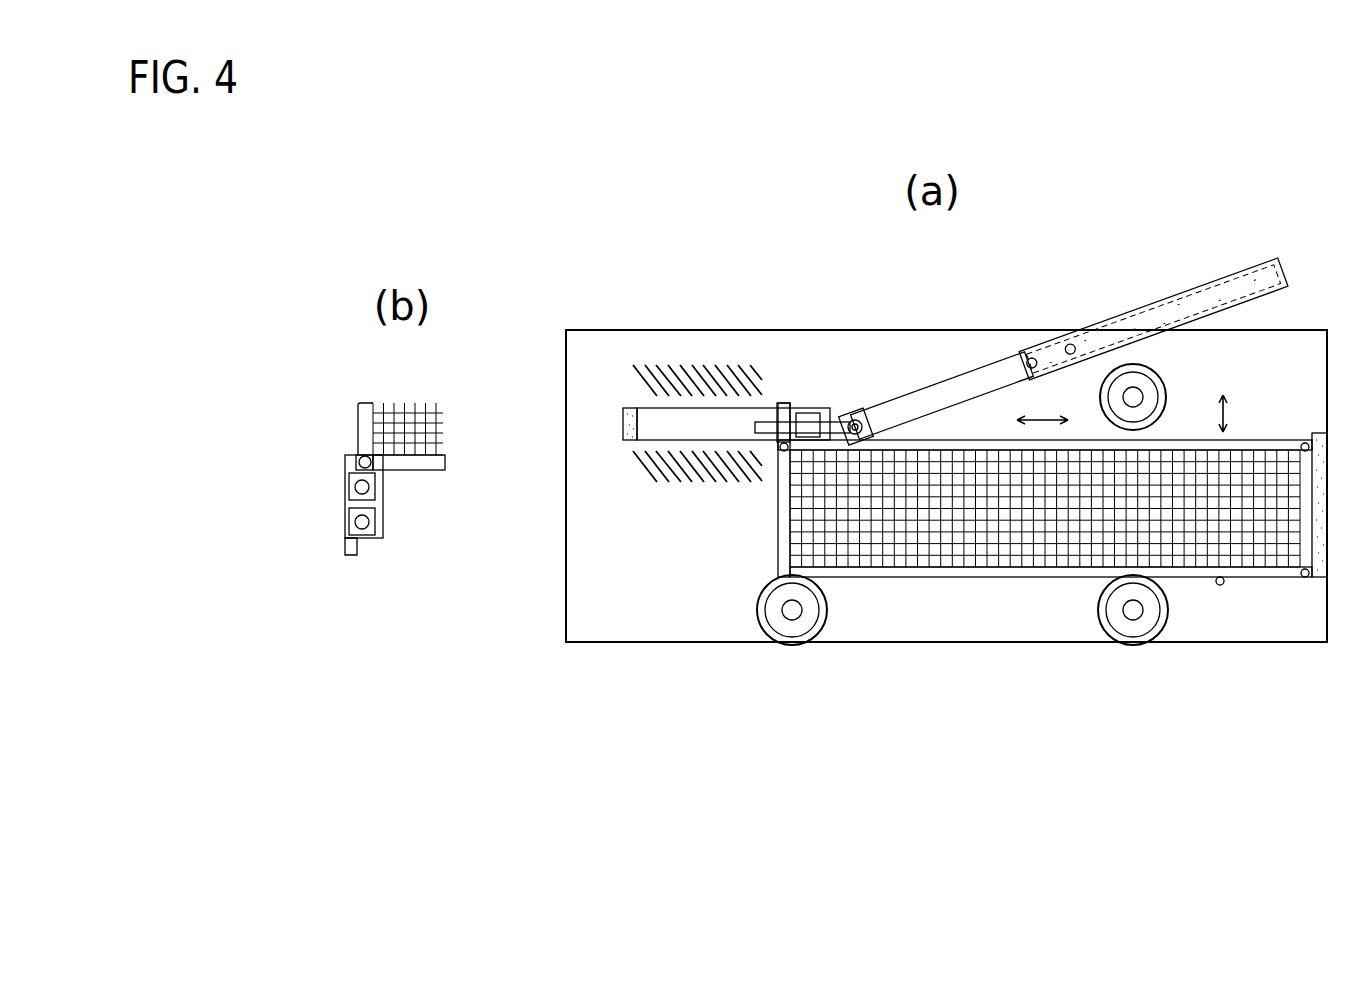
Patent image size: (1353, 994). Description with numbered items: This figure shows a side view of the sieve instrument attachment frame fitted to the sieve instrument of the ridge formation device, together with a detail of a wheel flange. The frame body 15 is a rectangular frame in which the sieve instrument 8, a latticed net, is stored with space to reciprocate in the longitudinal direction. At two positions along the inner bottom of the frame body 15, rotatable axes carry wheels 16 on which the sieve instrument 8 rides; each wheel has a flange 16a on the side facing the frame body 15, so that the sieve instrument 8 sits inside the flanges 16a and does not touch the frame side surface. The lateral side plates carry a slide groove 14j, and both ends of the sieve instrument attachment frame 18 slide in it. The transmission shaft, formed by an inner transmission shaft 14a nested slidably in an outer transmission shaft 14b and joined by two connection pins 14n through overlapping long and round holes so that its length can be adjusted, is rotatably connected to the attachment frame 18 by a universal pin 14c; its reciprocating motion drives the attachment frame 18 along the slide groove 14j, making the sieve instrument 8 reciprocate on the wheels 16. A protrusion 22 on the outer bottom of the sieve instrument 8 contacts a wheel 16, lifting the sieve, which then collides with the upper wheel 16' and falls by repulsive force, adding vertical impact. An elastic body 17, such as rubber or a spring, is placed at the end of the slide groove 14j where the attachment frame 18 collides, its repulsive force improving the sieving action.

The sieve instrument 8 is at (987, 578).
The inner transmission shaft 14a is at (957, 386).
The outer transmission shaft 14b is at (1157, 317).
The universal pin 14c is at (856, 418).
The slide groove 14j is at (678, 420).
The connection pin 14n is at (1030, 357).
The frame body 15 is at (566, 598).
The wheel 16 is at (759, 570).
The wheel 16' is at (1212, 364).
The flange 16a is at (796, 618).
The elastic body 17 is at (633, 420).
The sieve instrument attachment frame 18 is at (801, 418).
The protrusion 22 is at (1221, 588).